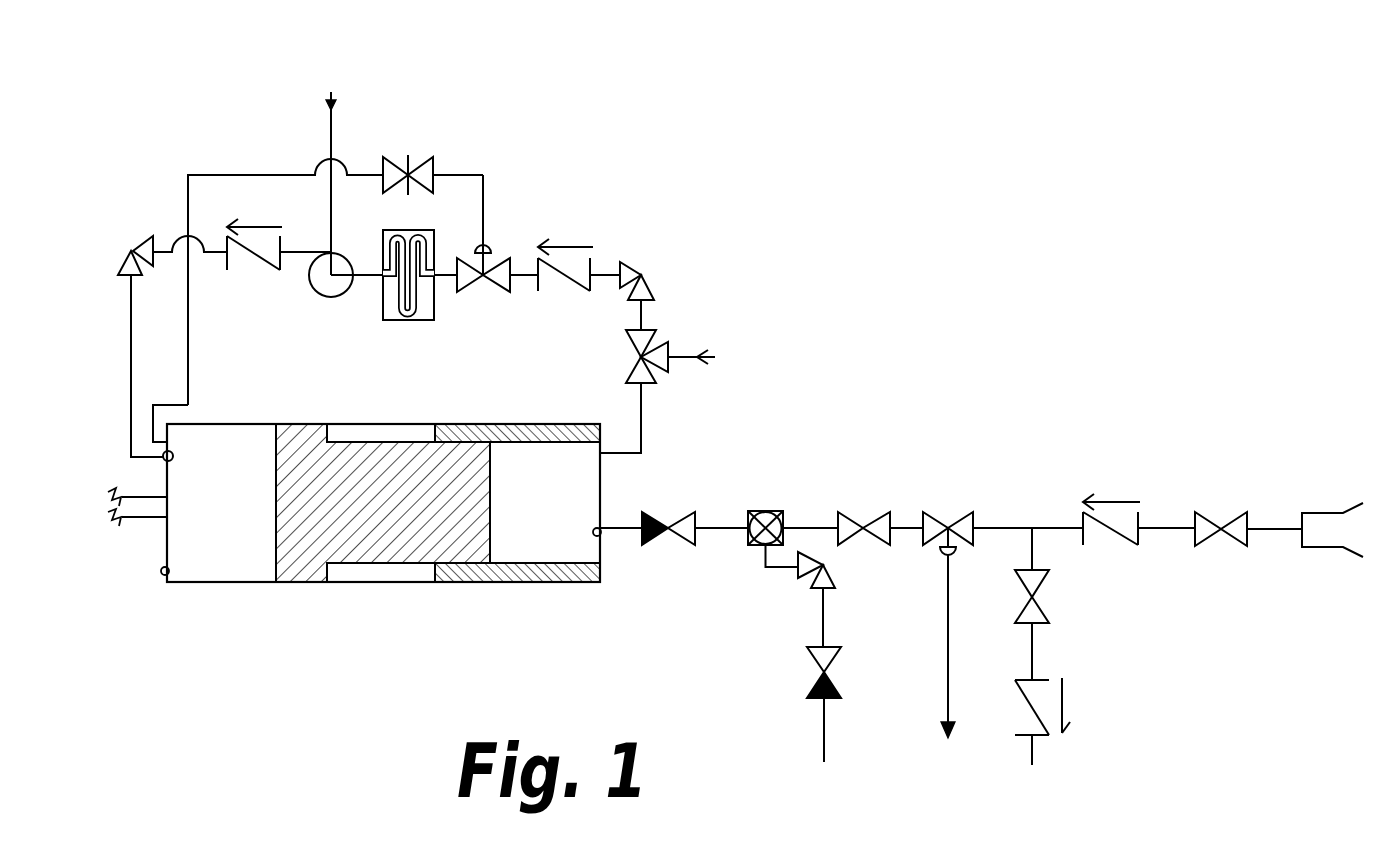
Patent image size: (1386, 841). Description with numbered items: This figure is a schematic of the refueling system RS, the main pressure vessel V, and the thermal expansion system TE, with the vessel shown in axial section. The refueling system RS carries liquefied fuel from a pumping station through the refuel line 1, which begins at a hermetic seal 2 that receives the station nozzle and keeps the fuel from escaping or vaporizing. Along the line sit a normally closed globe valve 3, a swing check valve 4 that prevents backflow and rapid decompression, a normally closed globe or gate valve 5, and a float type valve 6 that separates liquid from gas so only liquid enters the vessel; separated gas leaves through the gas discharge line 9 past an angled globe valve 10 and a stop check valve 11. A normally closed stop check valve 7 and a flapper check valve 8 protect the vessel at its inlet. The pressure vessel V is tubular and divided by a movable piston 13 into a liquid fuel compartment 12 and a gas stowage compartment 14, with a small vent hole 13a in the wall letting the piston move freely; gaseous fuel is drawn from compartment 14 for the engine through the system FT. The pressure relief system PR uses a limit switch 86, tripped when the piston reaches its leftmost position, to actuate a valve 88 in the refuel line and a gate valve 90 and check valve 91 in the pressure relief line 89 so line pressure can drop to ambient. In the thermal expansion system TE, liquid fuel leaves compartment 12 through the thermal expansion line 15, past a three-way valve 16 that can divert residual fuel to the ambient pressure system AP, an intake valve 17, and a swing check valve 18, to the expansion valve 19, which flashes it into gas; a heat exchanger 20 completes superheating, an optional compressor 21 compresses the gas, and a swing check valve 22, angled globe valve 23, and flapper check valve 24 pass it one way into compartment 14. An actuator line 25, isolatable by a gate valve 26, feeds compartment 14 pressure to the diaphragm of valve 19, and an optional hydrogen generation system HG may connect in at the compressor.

The refuel line 1 is at (1282, 531).
The hermetic seal 2 is at (1332, 530).
The normally closed globe valve 3 is at (1221, 538).
The swing check valve 4 is at (1139, 528).
The normally closed globe or gate valve 5 is at (880, 537).
The float type valve 6 is at (785, 539).
The normally closed stop check valve 7 is at (695, 537).
The flapper check valve 8 is at (607, 531).
The gas discharge line 9 is at (778, 569).
The normally opened angled globe valve 10 is at (811, 599).
The normally open stop check valve 11 is at (813, 704).
The liquid fuel compartment 12 is at (556, 510).
The movable piston 13 is at (313, 467).
The vent hole 13a is at (420, 432).
The gas stowage compartment 14 is at (246, 523).
The thermal expansion line 15 is at (636, 418).
The three-way valve 16 is at (638, 356).
The normally open angled globe valve 17 is at (629, 296).
The swing check valve 18 is at (579, 275).
The thermal expansion valve 19 is at (497, 243).
The heat exchanger 20 is at (420, 287).
The compressor 21 is at (346, 290).
The swing check valve 22 is at (279, 257).
The normally open angled globe valve 23 is at (172, 265).
The flapper check valve 24 is at (169, 372).
The thermal expansion valve actuator line 25 is at (285, 276).
The normally open gate valve 26 is at (433, 162).
The limit switch 86 is at (160, 571).
The valve 88 is at (1003, 621).
The pressure relief line 89 is at (1034, 563).
The normally closed gate valve 90 is at (1043, 625).
The check valve 91 is at (1058, 745).
The hydrogen generation system HG is at (358, 151).
The ambient pressure system AP is at (831, 369).
The thermal expansion system TE is at (503, 226).
The refueling system RS is at (846, 484).
The refuel line trip and pressure relief system PR is at (1062, 645).
The main pressure vessel V is at (357, 608).
The fuel transfer system FT is at (121, 507).